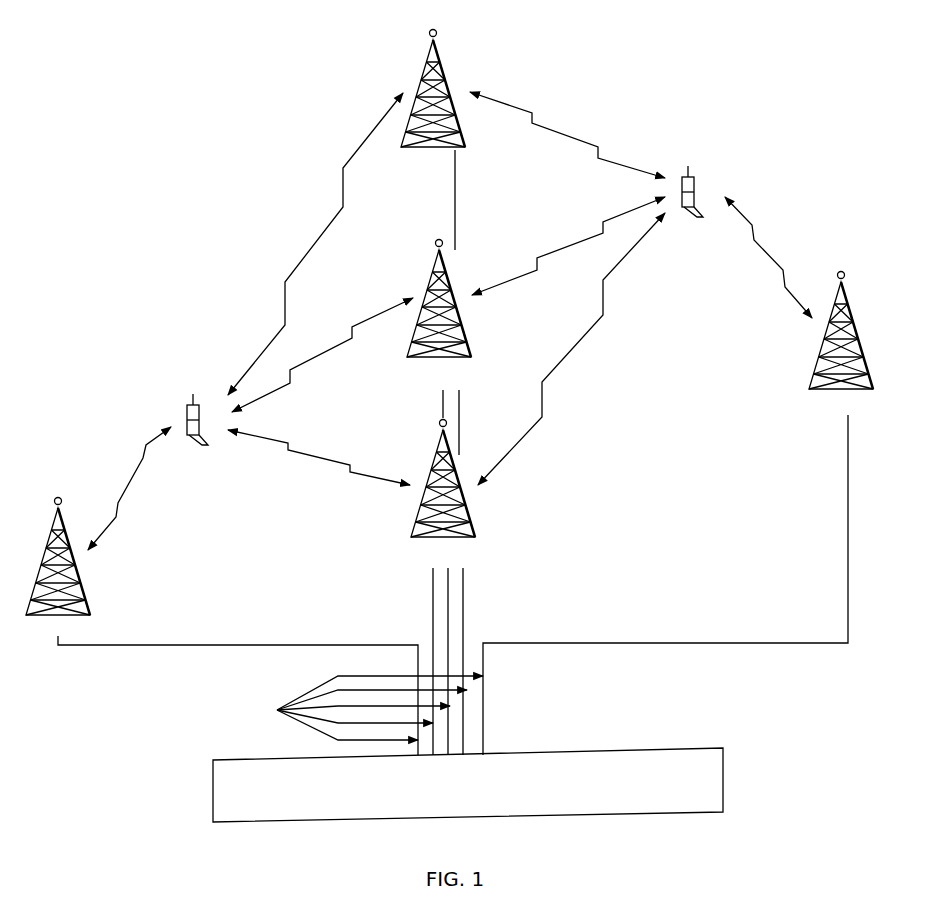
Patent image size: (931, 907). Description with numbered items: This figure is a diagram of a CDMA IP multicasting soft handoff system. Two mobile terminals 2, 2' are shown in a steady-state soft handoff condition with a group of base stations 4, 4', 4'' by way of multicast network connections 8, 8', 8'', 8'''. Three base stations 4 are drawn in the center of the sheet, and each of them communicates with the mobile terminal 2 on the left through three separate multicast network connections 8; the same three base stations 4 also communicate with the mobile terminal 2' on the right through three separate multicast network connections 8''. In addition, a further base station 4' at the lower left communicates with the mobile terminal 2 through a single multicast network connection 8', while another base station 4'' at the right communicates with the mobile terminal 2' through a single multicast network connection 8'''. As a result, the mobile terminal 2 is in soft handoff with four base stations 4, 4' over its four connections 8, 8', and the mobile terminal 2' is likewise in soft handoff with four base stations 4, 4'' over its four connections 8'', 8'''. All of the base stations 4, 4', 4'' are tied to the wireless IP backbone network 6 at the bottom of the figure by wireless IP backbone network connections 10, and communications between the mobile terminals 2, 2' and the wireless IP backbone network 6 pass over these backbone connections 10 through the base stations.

The mobile terminal 2 is at (170, 427).
The mobile terminal 2' is at (721, 199).
The base station 4 is at (423, 291).
The base station 4' is at (94, 568).
The base station 4'' is at (806, 354).
The wireless IP backbone network 6 is at (196, 790).
The multicast network connection 8 is at (320, 298).
The multicast network connection 8' is at (141, 488).
The multicast network connection 8'' is at (567, 288).
The multicast network connection 8''' is at (784, 257).
The wireless IP backbone network connection 10 is at (277, 710).